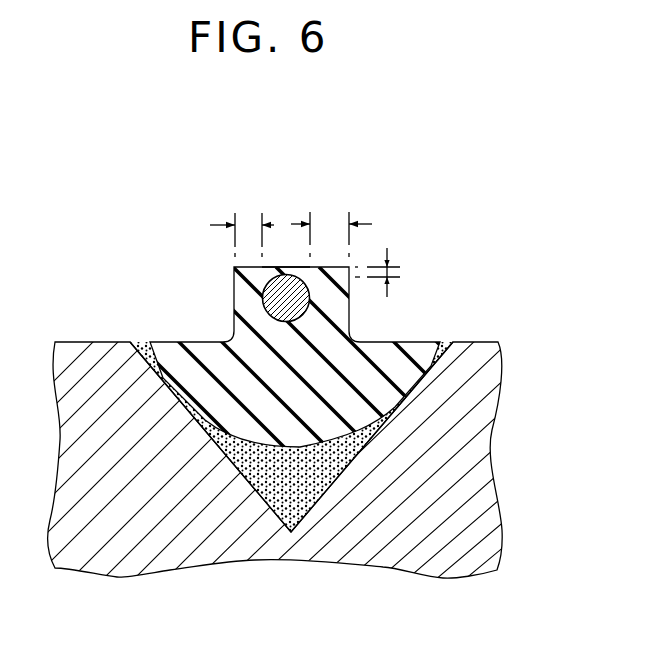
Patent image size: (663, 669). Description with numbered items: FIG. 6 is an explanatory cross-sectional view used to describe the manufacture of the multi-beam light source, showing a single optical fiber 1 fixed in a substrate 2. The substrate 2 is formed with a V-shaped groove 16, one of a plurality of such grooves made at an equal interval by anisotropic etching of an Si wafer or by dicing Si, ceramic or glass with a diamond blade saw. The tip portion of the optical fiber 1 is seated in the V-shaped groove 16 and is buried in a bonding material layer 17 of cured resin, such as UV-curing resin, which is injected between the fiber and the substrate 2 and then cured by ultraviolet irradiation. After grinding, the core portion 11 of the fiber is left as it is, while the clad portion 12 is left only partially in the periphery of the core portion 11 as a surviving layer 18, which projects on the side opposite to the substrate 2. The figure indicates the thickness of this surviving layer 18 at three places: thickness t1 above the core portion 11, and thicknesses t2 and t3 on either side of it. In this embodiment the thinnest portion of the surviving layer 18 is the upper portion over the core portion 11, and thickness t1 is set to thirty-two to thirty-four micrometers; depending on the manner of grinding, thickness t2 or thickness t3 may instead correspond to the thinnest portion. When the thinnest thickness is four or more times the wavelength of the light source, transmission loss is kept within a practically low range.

The optical fiber 1 is at (306, 278).
The substrate 2 is at (115, 527).
The core portion 11 is at (283, 286).
The clad portion 12 is at (167, 353).
The V-shaped groove 16 is at (250, 490).
The bonding material layer 17 is at (310, 477).
The surviving layer 18 is at (292, 268).
The thickness t1 is at (394, 272).
The thickness t2 is at (242, 220).
The thickness t3 is at (331, 220).